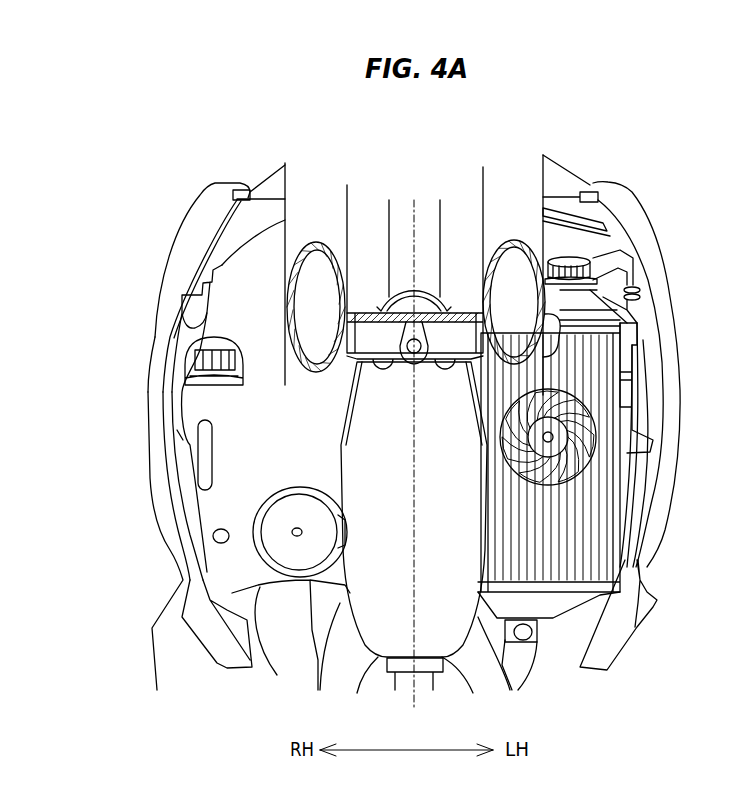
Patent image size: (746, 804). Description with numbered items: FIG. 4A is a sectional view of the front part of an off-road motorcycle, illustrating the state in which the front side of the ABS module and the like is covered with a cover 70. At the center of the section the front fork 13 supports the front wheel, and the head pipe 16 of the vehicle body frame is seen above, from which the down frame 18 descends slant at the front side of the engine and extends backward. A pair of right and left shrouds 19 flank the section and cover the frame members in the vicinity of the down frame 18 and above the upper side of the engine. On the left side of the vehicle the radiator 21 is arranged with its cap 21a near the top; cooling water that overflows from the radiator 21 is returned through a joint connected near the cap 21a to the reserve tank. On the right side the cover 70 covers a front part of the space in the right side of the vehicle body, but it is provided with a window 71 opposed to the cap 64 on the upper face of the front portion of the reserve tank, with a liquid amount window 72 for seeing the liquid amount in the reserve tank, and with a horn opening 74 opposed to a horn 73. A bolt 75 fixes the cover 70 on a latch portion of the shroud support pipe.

The front fork 13 is at (297, 232).
The head pipe 16 is at (430, 217).
The down frame 18 is at (363, 598).
The shrouds 19 is at (203, 588).
The radiator 21 is at (600, 513).
The cap 21a is at (577, 260).
The cap 64 is at (200, 340).
The cover 70 is at (213, 403).
The window 71 is at (190, 375).
The liquid amount window 72 is at (200, 458).
The horn 73 is at (275, 537).
The horn opening 74 is at (290, 573).
The bolt 75 is at (213, 532).